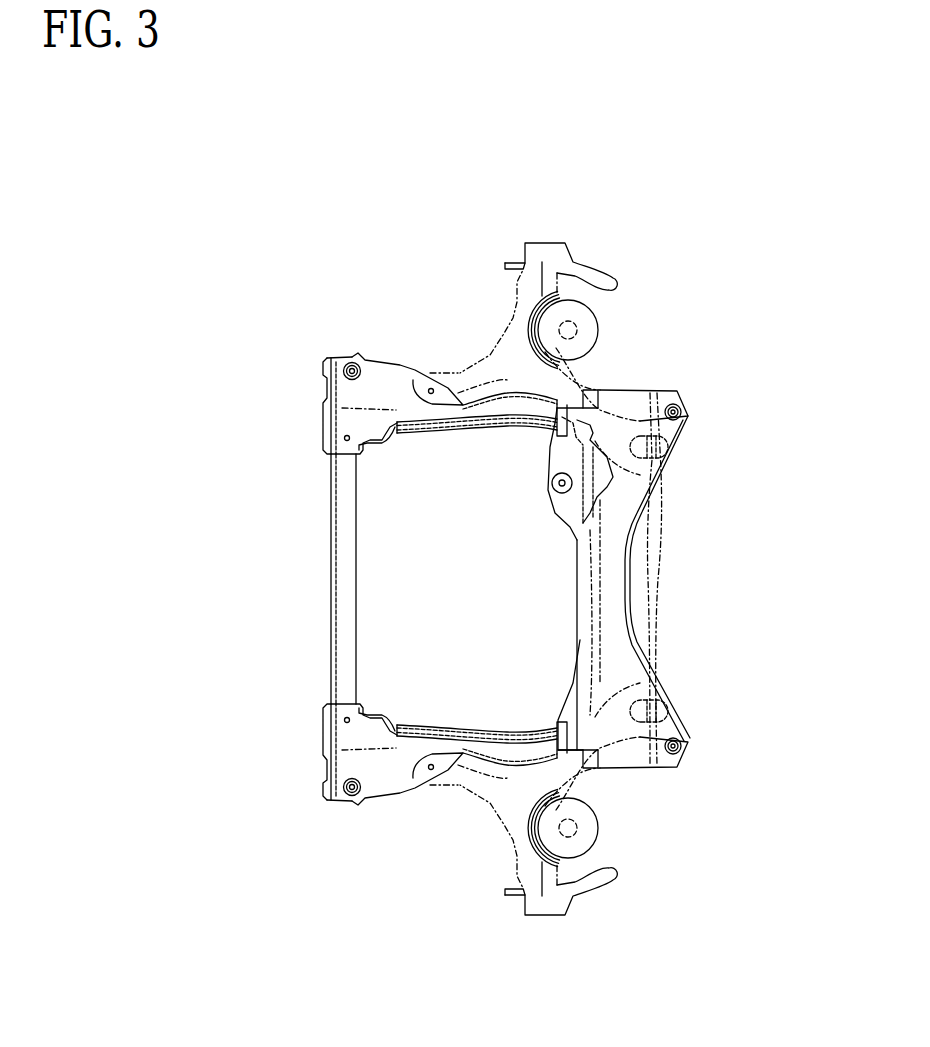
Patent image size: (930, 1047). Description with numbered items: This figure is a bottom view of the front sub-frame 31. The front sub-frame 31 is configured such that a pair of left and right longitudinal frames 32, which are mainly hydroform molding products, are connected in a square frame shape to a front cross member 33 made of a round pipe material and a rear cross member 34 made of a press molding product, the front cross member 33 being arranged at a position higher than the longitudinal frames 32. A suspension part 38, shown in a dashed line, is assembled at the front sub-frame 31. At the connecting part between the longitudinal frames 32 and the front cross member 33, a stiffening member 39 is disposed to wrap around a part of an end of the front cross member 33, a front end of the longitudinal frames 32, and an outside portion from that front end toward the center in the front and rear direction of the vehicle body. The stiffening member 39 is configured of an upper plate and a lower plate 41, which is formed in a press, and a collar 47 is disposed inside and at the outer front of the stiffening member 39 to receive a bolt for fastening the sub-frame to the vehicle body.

The front sub-frame 31 is at (668, 238).
The longitudinal frame 32 is at (510, 405).
The front cross member 33 is at (343, 565).
The rear cross member 34 is at (620, 568).
The suspension part 38 is at (672, 518).
The stiffening member 39 is at (312, 395).
The lower plate 41 is at (375, 385).
The collar 47 is at (334, 357).